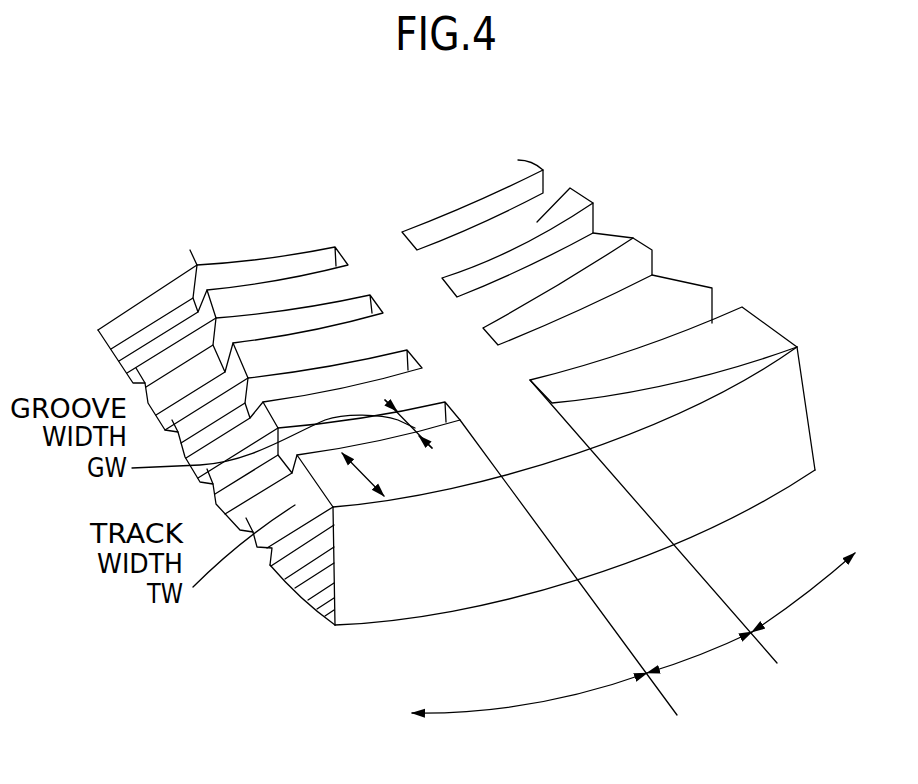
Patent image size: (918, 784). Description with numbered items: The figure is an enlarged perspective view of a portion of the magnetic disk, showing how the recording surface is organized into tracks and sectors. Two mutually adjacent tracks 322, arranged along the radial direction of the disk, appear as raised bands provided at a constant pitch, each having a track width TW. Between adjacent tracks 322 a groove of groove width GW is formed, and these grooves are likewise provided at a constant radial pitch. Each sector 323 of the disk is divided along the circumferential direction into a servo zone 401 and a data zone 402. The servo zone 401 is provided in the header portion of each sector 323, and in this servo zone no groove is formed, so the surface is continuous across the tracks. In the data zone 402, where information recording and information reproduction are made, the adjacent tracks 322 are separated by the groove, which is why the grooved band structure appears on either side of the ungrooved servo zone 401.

The track 322 is at (571, 210).
The sector 323 is at (597, 288).
The servo zone 401 is at (703, 653).
The data zone 402 is at (522, 706).